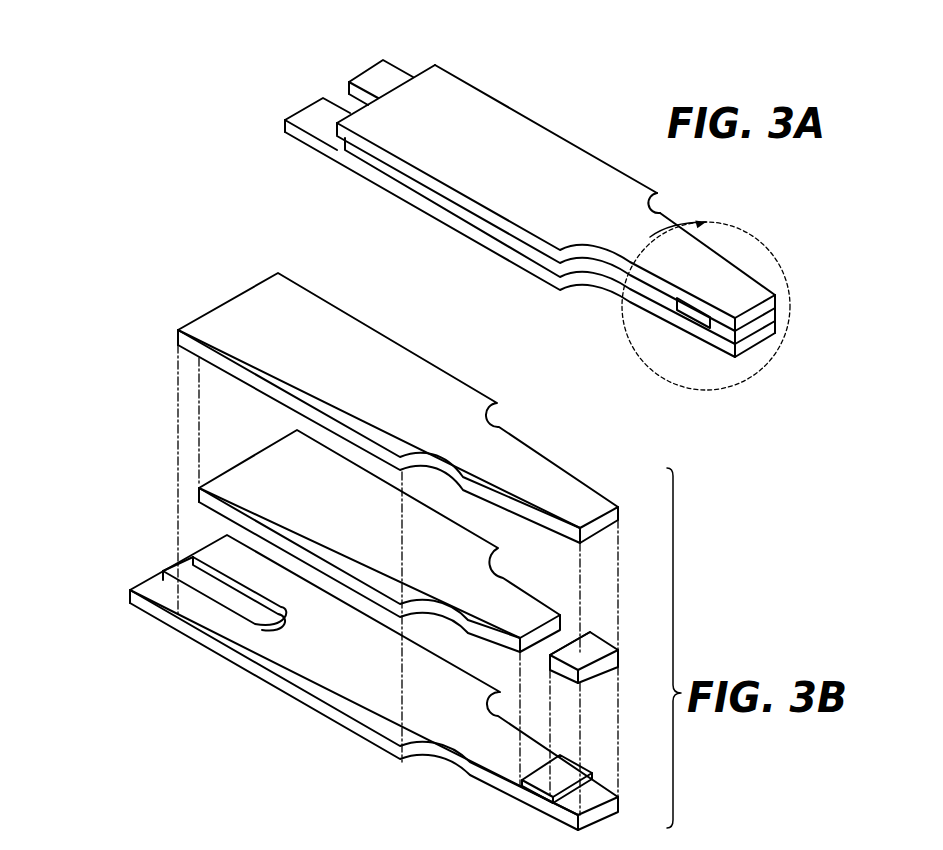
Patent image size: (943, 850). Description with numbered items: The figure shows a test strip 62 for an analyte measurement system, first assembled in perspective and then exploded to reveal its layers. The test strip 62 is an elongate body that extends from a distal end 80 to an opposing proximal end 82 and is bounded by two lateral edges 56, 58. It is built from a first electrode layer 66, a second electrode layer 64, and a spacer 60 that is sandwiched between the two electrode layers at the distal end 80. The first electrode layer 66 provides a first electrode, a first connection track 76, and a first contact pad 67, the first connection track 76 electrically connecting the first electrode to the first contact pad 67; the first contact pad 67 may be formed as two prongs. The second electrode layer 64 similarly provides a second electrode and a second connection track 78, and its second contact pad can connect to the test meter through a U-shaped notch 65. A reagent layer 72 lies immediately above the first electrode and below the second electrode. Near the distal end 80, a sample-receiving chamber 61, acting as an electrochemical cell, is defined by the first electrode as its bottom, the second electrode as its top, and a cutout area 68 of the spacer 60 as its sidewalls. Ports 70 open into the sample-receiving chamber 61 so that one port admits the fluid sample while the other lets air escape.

In FIG. 3A, the lateral edge 56 is at (508, 247).
In FIG. 3A, the lateral edge 58 is at (658, 217).
In FIG. 3B, the spacer 60 is at (295, 415).
In FIG. 3B, the sample-receiving chamber 61 is at (565, 636).
In FIG. 3A, the test strip 62 is at (623, 103).
In FIG. 3B, the test strip 62 is at (77, 824).
In FIG. 3B, the second electrode layer 64 is at (276, 257).
In FIG. 3B, the U-shaped notch 65 is at (240, 618).
In FIG. 3B, the first electrode layer 66 is at (222, 519).
In FIG. 3A, the first contact pad 67 is at (377, 78).
In FIG. 3B, the first contact pad 67 is at (232, 560).
In FIG. 3B, the cutout area 68 is at (550, 633).
In FIG. 3A, the ports 70 is at (688, 310).
In FIG. 3B, the ports 70 is at (573, 617).
In FIG. 3B, the reagent layer 72 is at (567, 770).
In FIG. 3B, the first connection track 76 is at (368, 712).
In FIG. 3A, the second connection track 78 is at (528, 165).
In FIG. 3B, the second connection track 78 is at (338, 355).
In FIG. 3A, the distal end 80 is at (764, 246).
In FIG. 3A, the proximal end 82 is at (436, 82).